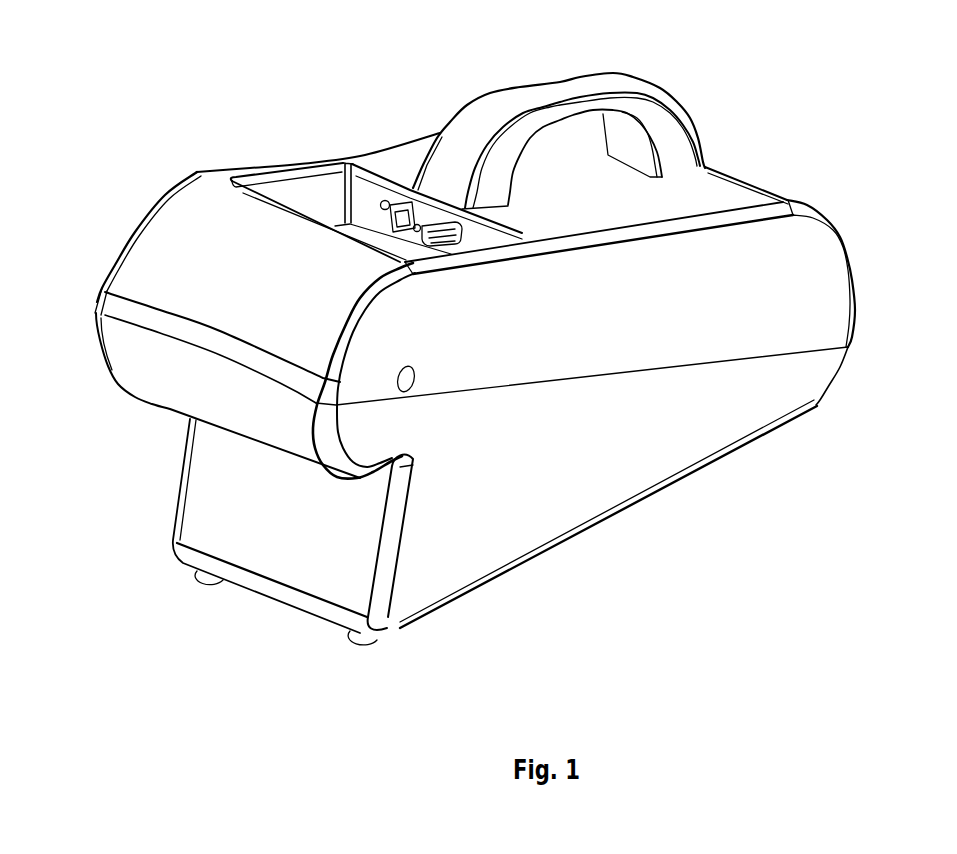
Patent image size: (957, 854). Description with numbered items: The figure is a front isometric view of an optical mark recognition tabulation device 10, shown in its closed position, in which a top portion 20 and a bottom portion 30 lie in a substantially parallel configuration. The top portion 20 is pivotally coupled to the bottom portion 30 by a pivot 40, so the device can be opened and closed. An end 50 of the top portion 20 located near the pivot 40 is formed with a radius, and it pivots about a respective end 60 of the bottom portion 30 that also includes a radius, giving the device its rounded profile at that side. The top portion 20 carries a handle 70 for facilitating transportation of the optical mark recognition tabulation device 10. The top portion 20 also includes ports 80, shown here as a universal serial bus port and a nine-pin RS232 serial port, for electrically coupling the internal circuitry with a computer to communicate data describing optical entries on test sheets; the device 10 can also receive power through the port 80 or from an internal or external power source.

The optical mark recognition tabulation device 10 is at (877, 148).
The top portion 20 is at (612, 322).
The bottom portion 30 is at (590, 480).
The pivot 40 is at (415, 367).
The end of the top portion 50 is at (117, 243).
The end of the bottom portion 60 is at (115, 363).
The handle 70 is at (564, 80).
The ports 80 is at (509, 214).